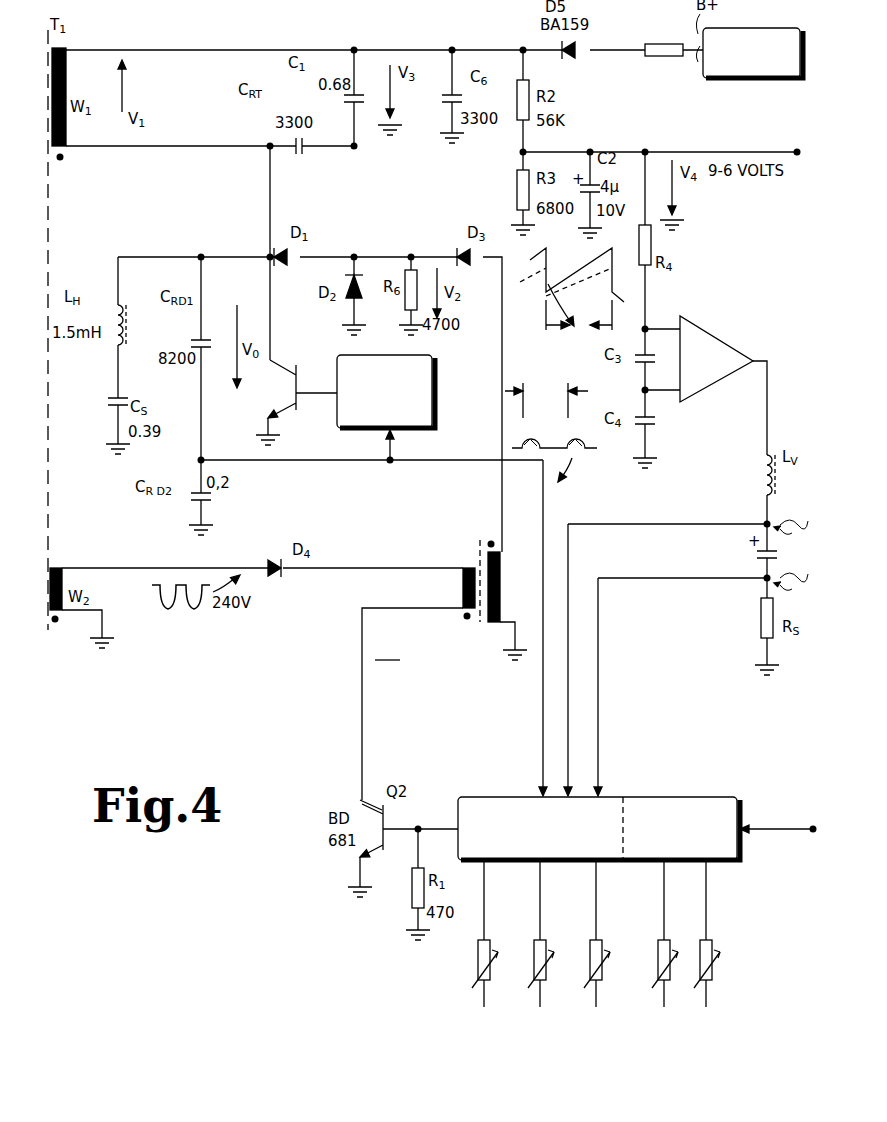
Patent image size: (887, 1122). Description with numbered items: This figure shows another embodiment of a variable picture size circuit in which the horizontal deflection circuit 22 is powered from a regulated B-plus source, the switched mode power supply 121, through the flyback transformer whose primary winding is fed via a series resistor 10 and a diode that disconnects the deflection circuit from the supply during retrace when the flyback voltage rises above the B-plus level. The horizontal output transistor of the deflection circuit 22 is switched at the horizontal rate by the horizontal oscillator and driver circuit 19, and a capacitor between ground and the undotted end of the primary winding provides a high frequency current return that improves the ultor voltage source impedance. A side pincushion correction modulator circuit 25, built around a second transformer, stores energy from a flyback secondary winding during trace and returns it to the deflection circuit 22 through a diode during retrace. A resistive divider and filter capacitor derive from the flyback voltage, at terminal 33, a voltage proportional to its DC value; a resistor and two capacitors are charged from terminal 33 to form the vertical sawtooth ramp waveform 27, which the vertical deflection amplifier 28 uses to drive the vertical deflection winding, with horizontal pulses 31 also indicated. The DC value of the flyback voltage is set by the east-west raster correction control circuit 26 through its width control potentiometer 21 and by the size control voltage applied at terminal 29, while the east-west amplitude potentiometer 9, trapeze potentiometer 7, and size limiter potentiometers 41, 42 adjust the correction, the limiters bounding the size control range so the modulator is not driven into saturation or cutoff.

The resistor 10 is at (665, 53).
The switched mode power supply 121 is at (769, 28).
The terminal 33 is at (797, 150).
The vertical sawtooth ramp voltage waveform 27 is at (575, 262).
The vertical deflection amplifier 28 is at (704, 318).
The horizontal oscillator and driver circuit 19 is at (436, 402).
The horizontal deflection circuit 22 is at (275, 498).
The horizontal pulse waveform 31 is at (525, 422).
The side pincushion correction modulator circuit 25 is at (503, 730).
The east-west raster correction control circuit 26 is at (488, 796).
The terminal 29 is at (810, 829).
The east-west amplitude potentiometer 9 is at (476, 959).
The trapeze potentiometer 7 is at (541, 947).
The width control potentiometer 21 is at (589, 960).
The size limiter potentiometer 41 is at (670, 960).
The size limiter potentiometer 42 is at (716, 948).